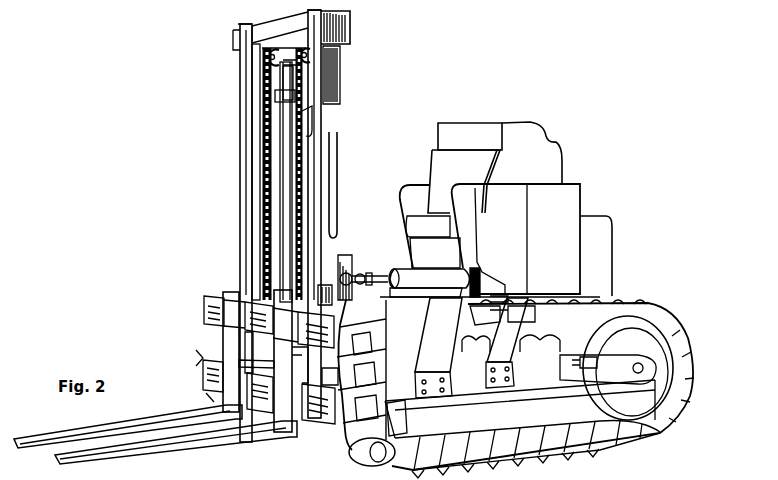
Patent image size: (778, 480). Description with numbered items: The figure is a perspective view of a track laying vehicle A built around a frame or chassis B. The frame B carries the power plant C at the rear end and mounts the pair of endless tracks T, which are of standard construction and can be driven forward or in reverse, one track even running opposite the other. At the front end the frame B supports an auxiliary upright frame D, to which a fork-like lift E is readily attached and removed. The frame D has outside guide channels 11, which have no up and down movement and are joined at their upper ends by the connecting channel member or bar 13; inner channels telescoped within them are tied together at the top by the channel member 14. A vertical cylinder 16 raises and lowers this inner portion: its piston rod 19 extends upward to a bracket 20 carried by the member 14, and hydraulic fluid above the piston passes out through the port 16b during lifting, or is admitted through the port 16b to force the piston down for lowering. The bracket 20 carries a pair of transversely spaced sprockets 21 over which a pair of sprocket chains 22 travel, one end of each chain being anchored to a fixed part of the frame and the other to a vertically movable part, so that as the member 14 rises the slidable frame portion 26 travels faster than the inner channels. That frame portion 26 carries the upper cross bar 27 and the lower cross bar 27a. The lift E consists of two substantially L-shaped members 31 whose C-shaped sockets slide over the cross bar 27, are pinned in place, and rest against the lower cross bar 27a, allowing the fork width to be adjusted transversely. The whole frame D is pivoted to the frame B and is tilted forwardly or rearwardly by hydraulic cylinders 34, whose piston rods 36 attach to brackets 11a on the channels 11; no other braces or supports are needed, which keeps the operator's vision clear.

The outside guide channels 11 is at (246, 132).
The brackets 11a is at (345, 270).
The connecting channel member or bar 13 is at (326, 42).
The channel member 14 is at (292, 33).
The vertical cylinder 16 is at (285, 191).
The port 16b is at (304, 116).
The piston rod 19 is at (300, 84).
The bracket 20 is at (246, 52).
The sprockets 21 is at (264, 64).
The sprocket chains 22 is at (268, 159).
The slidable frame portion 26 is at (222, 343).
The upper cross bar 27 is at (216, 310).
The lower cross bar 27a is at (206, 362).
The L-shaped members 31 is at (196, 442).
The hydraulic cylinders 34 is at (438, 276).
The piston rods 36 is at (373, 278).
The vehicle A is at (582, 178).
The frame or chassis B is at (638, 393).
The power plant C is at (602, 256).
The auxiliary upright frame D is at (236, 104).
The fork-like lift E is at (52, 432).
The endless tracks T is at (648, 428).